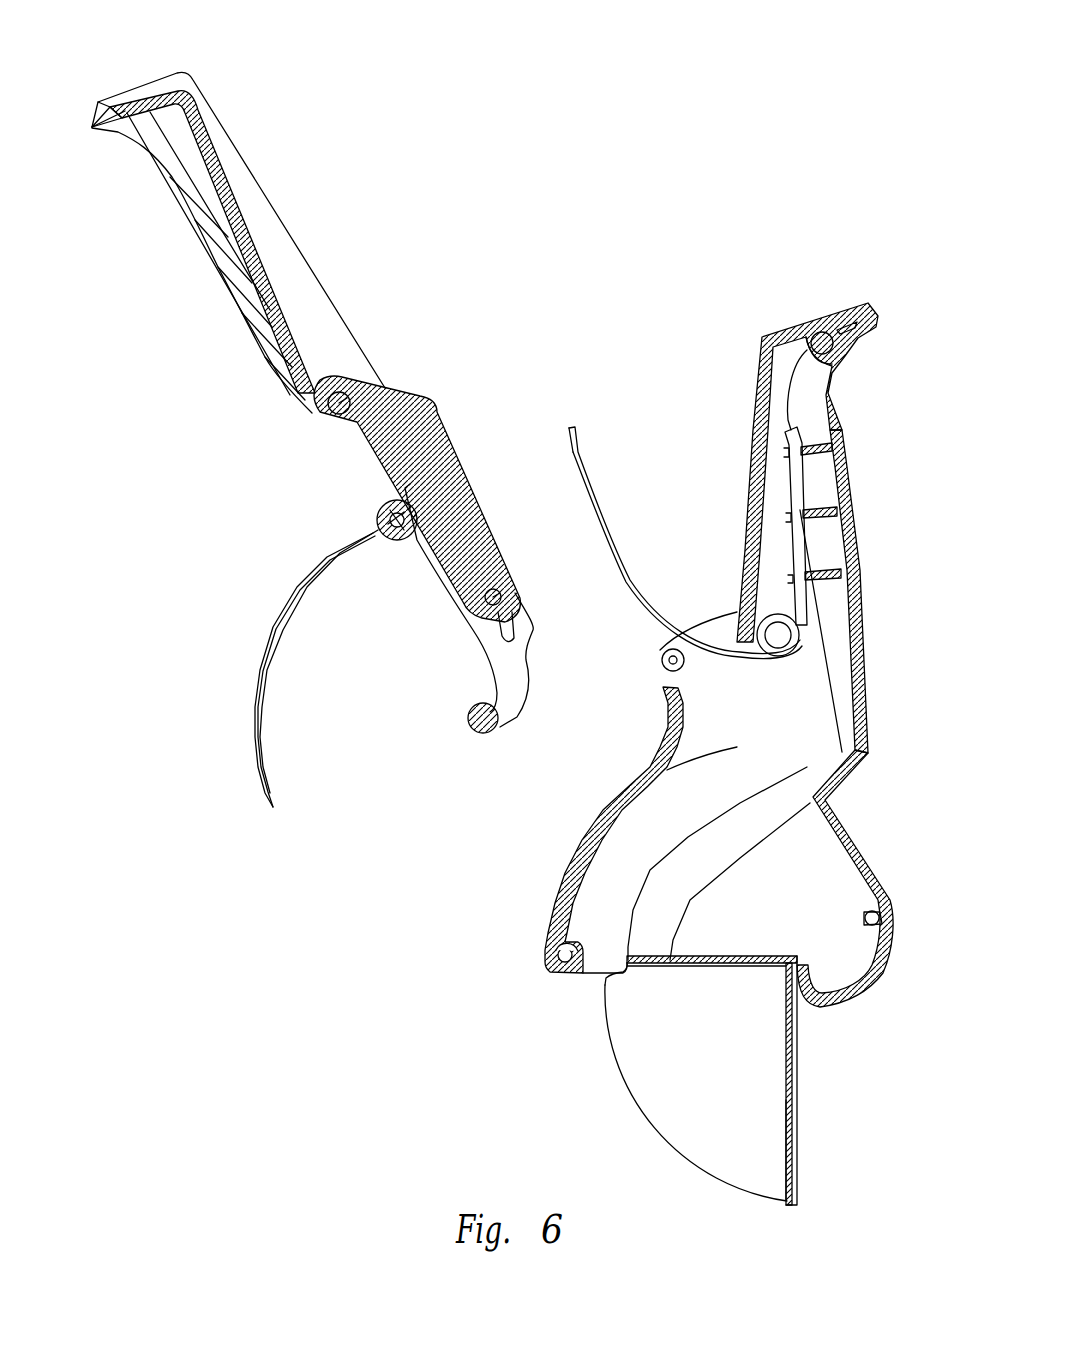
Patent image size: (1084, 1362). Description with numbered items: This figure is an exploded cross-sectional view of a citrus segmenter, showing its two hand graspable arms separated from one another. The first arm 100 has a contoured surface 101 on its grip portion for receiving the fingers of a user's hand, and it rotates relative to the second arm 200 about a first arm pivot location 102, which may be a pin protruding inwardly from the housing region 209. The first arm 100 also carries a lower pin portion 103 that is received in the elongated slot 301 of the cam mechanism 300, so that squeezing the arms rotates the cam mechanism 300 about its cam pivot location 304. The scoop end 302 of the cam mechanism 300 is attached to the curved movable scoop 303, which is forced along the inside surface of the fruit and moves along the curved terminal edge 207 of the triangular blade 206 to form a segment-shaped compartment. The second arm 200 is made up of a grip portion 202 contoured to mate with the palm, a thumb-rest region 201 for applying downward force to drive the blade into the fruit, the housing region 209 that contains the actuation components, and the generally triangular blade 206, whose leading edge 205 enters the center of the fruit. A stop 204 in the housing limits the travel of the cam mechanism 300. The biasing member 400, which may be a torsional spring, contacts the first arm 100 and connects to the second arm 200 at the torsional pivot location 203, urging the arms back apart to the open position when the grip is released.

The first arm 100 is at (140, 82).
The contoured surface 101 is at (207, 253).
The first arm pivot location 102 is at (330, 410).
The lower pin portion 103 is at (500, 596).
The cam mechanism 300 is at (490, 638).
The elongated slot 301 is at (515, 628).
The scoop end 302 is at (380, 520).
The curved movable scoop 303 is at (262, 790).
The cam pivot location 304 is at (494, 731).
The second arm 200 is at (813, 317).
The thumb-rest region 201 is at (877, 322).
The grip portion 202 is at (848, 472).
The torsional pivot location 203 is at (785, 640).
The stop 204 is at (880, 925).
The leading edge 205 is at (797, 1105).
The triangular blade 206 is at (763, 1150).
The curved terminal edge 207 is at (662, 1140).
The housing region 209 is at (862, 840).
The biasing member 400 is at (650, 600).